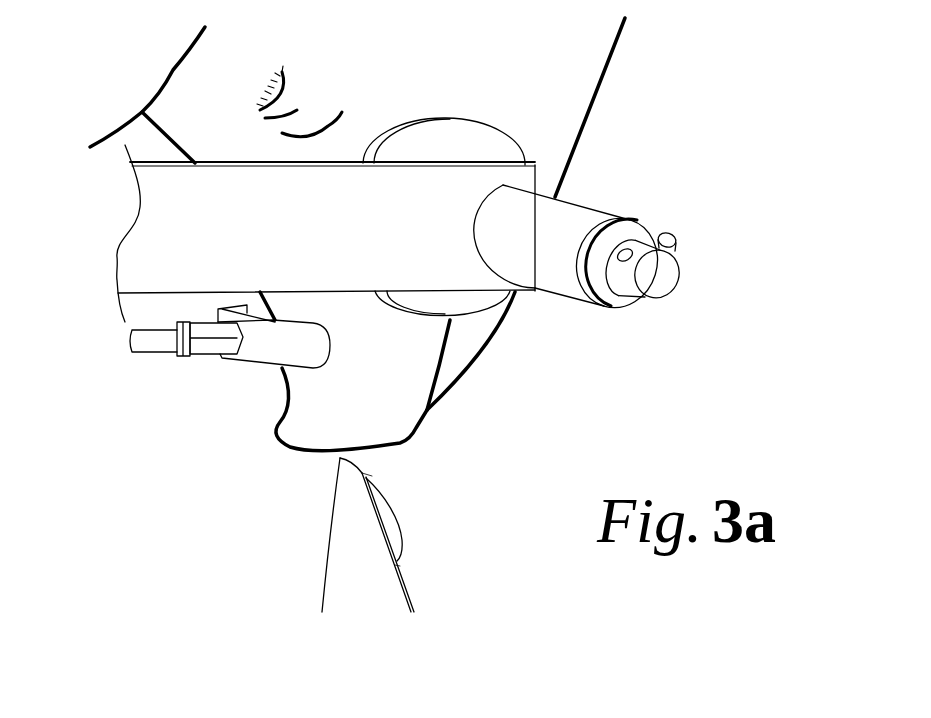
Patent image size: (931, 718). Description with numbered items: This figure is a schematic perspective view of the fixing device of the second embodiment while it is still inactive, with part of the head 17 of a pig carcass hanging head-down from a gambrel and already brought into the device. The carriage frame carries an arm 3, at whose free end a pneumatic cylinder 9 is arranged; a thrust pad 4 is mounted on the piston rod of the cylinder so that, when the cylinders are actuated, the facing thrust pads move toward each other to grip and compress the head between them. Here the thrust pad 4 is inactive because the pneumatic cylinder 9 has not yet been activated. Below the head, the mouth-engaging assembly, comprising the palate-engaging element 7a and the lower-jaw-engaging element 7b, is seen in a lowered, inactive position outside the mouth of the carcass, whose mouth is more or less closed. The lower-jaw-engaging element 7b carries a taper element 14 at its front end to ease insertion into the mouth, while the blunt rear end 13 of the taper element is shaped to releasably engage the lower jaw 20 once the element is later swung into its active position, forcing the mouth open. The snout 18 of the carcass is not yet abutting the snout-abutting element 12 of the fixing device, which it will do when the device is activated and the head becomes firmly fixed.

The arm 3 is at (298, 238).
The thrust pad 4 is at (456, 151).
The palate-engaging element 7a is at (355, 545).
The lower-jaw-engaging element 7b is at (393, 522).
The pneumatic cylinder 9 is at (525, 251).
The snout-abutting element 12 is at (305, 343).
The rear end 13 is at (410, 568).
The taper element 14 is at (376, 470).
The head 17 is at (468, 53).
The snout 18 is at (317, 423).
The lower jaw 20 is at (463, 342).